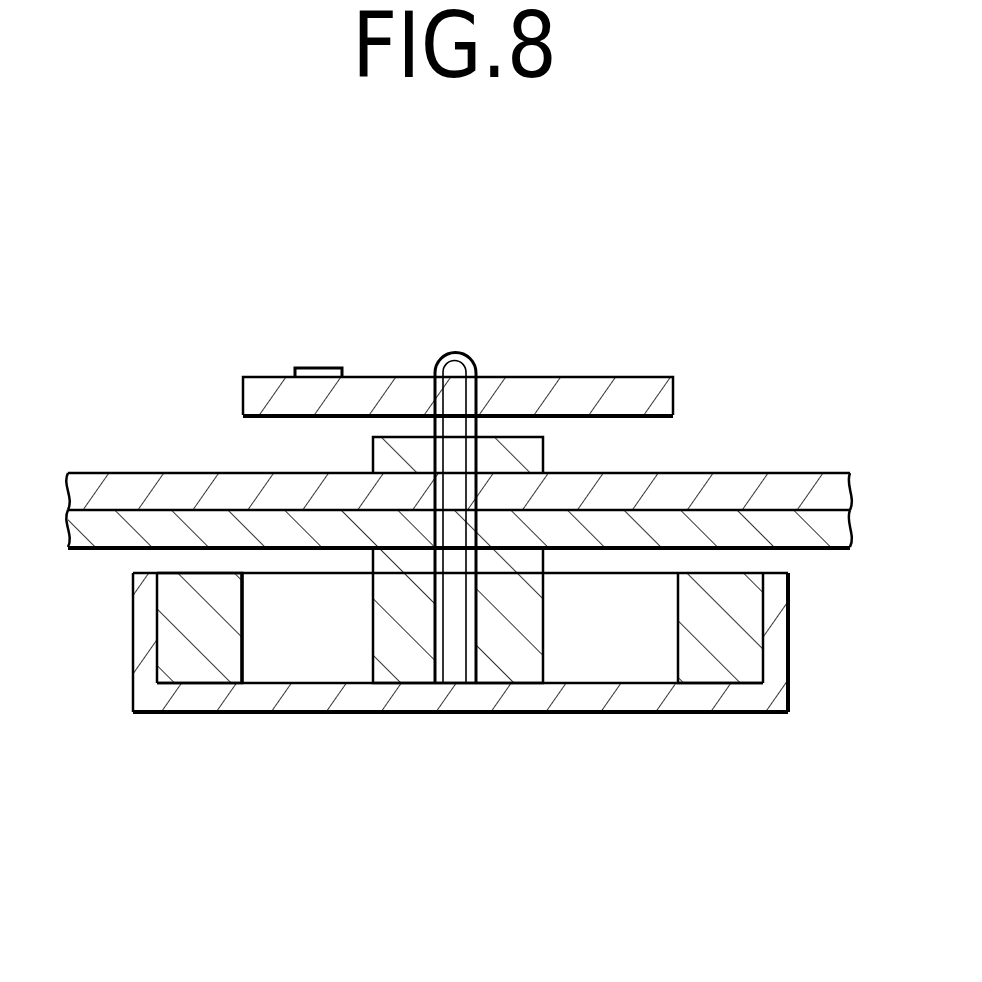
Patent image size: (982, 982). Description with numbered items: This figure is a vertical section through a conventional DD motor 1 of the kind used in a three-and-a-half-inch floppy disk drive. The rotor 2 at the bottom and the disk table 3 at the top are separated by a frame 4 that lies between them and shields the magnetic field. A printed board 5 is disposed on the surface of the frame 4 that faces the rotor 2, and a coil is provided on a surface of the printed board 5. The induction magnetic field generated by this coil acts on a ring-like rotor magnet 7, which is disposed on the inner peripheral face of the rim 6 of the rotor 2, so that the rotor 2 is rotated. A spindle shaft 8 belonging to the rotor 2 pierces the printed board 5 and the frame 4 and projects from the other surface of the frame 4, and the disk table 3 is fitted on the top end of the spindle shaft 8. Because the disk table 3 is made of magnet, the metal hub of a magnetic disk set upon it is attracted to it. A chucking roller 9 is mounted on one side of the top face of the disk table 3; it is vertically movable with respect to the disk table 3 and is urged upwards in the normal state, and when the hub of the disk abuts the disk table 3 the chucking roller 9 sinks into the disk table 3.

The DD motor 1 is at (448, 524).
The rotor 2 is at (603, 735).
The disk table 3 is at (625, 376).
The frame 4 is at (826, 472).
The printed board 5 is at (833, 550).
The rim 6 is at (133, 629).
The rotor magnet 7 is at (272, 676).
The spindle shaft 8 is at (433, 650).
The chucking roller 9 is at (318, 367).